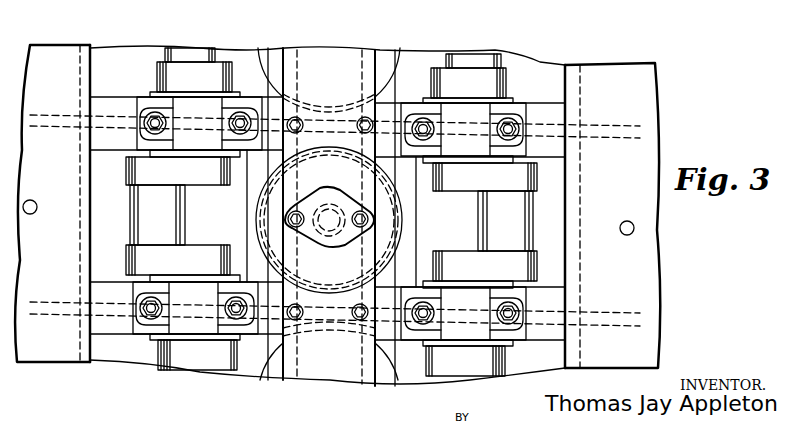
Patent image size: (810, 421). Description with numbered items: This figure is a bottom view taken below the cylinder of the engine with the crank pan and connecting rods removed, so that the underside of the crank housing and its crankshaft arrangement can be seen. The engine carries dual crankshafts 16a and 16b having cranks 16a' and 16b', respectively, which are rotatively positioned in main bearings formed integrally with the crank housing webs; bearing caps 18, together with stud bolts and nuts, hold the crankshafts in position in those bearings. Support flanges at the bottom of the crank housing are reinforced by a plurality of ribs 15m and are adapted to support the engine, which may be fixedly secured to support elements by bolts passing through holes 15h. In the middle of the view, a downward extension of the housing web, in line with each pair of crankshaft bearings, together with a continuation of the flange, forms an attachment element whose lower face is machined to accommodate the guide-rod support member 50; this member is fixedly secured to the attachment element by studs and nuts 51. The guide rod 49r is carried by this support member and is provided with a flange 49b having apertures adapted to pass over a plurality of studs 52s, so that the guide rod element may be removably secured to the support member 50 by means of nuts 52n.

The ribs 15m is at (50, 115).
The holes 15h is at (36, 200).
The crankshaft 16a is at (134, 185).
The crank 16a' is at (135, 216).
The crankshaft 16b is at (535, 196).
The crank 16b' is at (540, 222).
The bearing caps 18 is at (170, 101).
The guide rod 49r is at (260, 192).
The flange 49b is at (262, 238).
The guide-rod support member 50 is at (288, 52).
The studs and nuts 51 is at (370, 118).
The studs 52s is at (362, 218).
The nuts 52n is at (352, 236).